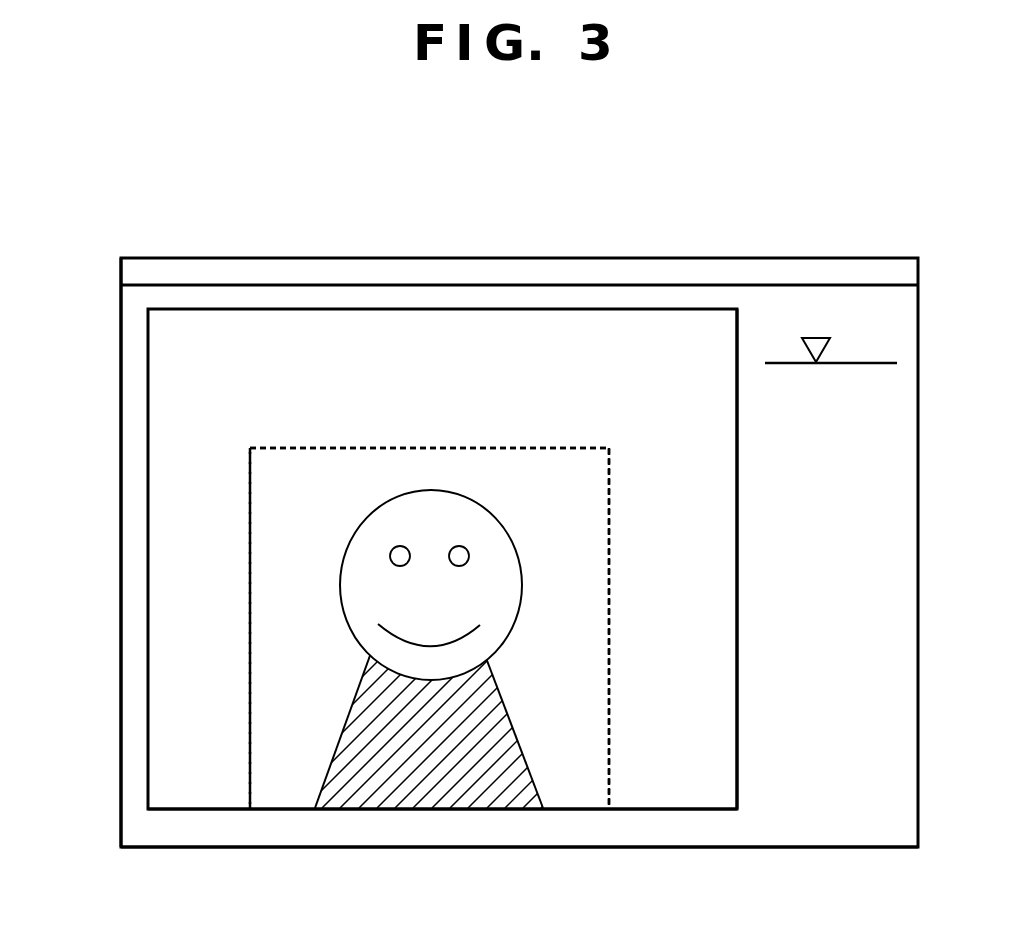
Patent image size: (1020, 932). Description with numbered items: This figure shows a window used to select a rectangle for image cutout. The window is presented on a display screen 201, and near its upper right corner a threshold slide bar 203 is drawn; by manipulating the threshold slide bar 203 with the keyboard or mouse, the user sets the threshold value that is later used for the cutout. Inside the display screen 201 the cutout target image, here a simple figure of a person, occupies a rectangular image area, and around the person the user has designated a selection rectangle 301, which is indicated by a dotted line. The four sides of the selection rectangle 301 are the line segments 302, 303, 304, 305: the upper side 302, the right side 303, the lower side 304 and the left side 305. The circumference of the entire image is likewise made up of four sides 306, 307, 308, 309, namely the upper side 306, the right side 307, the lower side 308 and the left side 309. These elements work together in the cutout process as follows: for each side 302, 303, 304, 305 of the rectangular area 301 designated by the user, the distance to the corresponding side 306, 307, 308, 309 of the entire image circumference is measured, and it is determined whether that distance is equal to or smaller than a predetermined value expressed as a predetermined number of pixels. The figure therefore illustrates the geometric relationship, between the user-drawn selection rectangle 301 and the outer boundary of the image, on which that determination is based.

The display screen 201 is at (572, 258).
The threshold slide bar 203 is at (775, 355).
The selection rectangle 301 is at (402, 448).
The side of selection rectangle 302 is at (481, 448).
The side of selection rectangle 303 is at (609, 568).
The side of selection rectangle 304 is at (580, 811).
The side of selection rectangle 305 is at (248, 577).
The side of entire image circumference 306 is at (252, 308).
The side of entire image circumference 307 is at (738, 673).
The side of entire image circumference 308 is at (692, 811).
The side of entire image circumference 309 is at (147, 516).